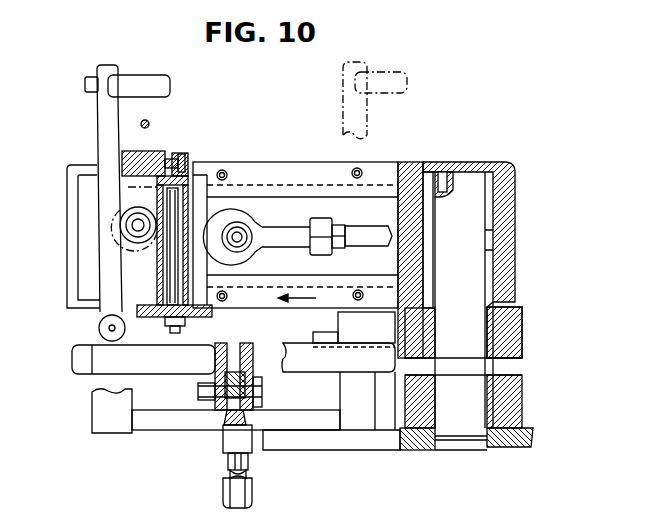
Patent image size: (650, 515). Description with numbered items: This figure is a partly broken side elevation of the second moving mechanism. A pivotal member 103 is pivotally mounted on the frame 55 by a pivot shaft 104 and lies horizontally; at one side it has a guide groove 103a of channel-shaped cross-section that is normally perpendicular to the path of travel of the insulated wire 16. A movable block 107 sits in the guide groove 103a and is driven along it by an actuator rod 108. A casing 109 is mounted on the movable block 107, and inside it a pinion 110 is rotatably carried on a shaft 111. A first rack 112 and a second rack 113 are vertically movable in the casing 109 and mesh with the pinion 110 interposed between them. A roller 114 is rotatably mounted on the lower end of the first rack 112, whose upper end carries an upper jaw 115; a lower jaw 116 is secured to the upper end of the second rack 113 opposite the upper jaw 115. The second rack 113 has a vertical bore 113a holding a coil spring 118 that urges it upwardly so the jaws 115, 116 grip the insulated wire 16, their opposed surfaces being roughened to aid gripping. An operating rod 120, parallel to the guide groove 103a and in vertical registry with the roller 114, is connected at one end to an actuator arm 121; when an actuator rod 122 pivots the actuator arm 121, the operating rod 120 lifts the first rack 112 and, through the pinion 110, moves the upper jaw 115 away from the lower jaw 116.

The insulated wire 16 is at (150, 121).
The frame 55 is at (385, 440).
The pivotal member 103 is at (503, 208).
The guide groove 103a is at (388, 200).
The pivot shaft 104 is at (465, 200).
The movable block 107 is at (256, 182).
The actuator rod 108 is at (295, 225).
The casing 109 is at (85, 290).
The pinion 110 is at (127, 232).
The shaft 111 is at (135, 223).
The first rack 112 is at (108, 121).
The second rack 113 is at (190, 185).
The vertical bore 113a is at (180, 258).
The roller 114 is at (98, 330).
The upper jaw 115 is at (150, 78).
The lower jaw 116 is at (160, 150).
The coil spring 118 is at (172, 272).
The operating rod 120 is at (150, 360).
The actuator arm 121 is at (258, 348).
The actuator rod 122 is at (246, 440).